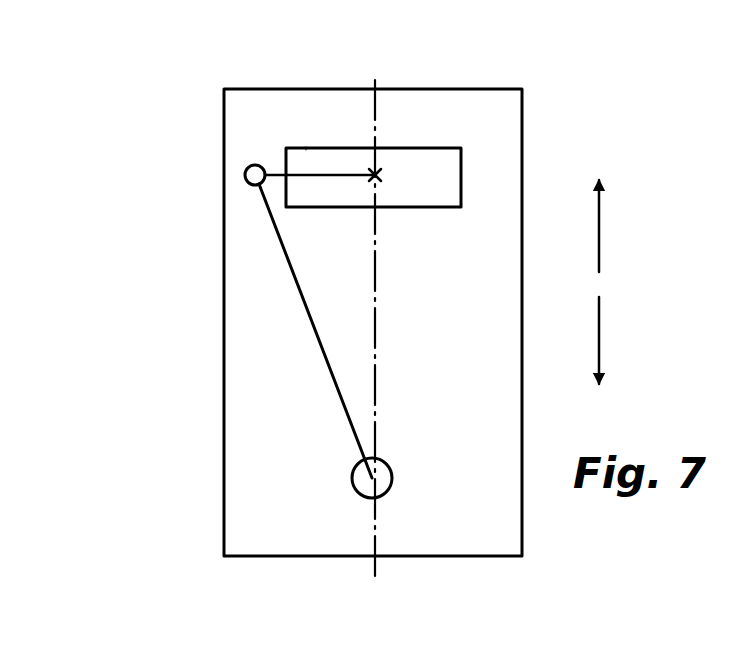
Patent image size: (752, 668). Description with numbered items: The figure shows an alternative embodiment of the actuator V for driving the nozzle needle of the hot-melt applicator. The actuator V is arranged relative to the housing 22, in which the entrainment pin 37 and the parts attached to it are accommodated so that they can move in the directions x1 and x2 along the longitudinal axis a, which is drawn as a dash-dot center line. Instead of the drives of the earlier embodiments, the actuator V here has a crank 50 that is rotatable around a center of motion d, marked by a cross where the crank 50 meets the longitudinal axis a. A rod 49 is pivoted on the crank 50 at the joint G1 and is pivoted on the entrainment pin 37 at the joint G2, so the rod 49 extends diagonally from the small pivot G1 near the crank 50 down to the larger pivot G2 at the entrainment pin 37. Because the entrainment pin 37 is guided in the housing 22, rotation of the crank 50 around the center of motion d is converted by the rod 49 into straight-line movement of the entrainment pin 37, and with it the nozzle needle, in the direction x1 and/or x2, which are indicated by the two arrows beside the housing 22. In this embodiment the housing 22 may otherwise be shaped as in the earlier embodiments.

The housing 22 is at (221, 118).
The crank 50 is at (291, 166).
The actuator V is at (305, 146).
The longitudinal axis a is at (379, 84).
The center of motion d is at (382, 172).
The pivot on the crank G1 is at (245, 191).
The rod 49 is at (290, 276).
The pivot on the entrainment pin G2 is at (350, 478).
The entrainment pin 37 is at (358, 495).
The direction x1 is at (633, 347).
The direction x2 is at (633, 219).